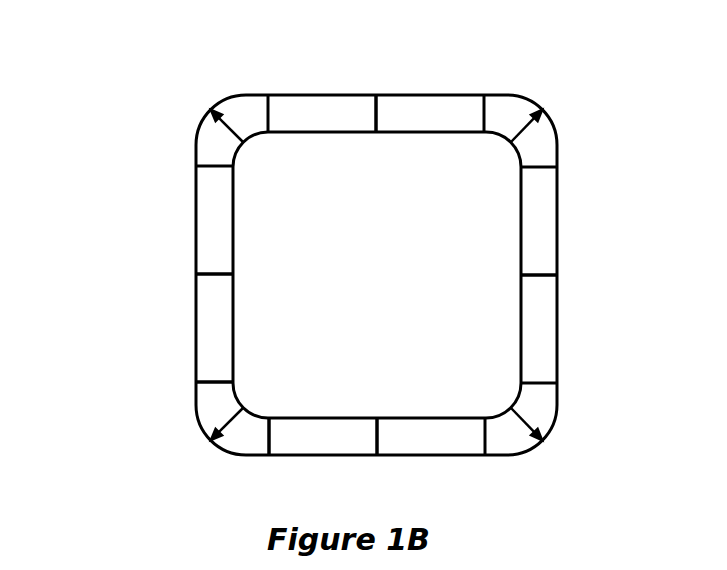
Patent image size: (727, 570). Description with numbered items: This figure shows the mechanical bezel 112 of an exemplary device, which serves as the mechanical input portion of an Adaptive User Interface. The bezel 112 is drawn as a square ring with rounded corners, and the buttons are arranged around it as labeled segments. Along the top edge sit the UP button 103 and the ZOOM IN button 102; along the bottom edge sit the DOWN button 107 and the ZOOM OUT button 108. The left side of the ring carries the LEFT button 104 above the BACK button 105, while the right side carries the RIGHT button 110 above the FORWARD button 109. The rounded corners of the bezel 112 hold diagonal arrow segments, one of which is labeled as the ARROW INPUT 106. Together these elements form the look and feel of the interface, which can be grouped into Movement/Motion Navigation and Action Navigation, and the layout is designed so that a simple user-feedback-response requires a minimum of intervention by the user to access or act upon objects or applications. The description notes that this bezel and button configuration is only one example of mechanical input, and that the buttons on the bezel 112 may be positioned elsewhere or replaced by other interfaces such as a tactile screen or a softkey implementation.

The ZOOM IN button 102 is at (458, 95).
The UP button 103 is at (288, 95).
The LEFT button 104 is at (196, 203).
The BACK button 105 is at (196, 319).
The ARROW INPUT button 106 is at (202, 428).
The DOWN button 107 is at (285, 455).
The ZOOM OUT button 108 is at (430, 455).
The FORWARD button 109 is at (557, 337).
The RIGHT button 110 is at (557, 203).
The bezel 112 is at (138, 70).